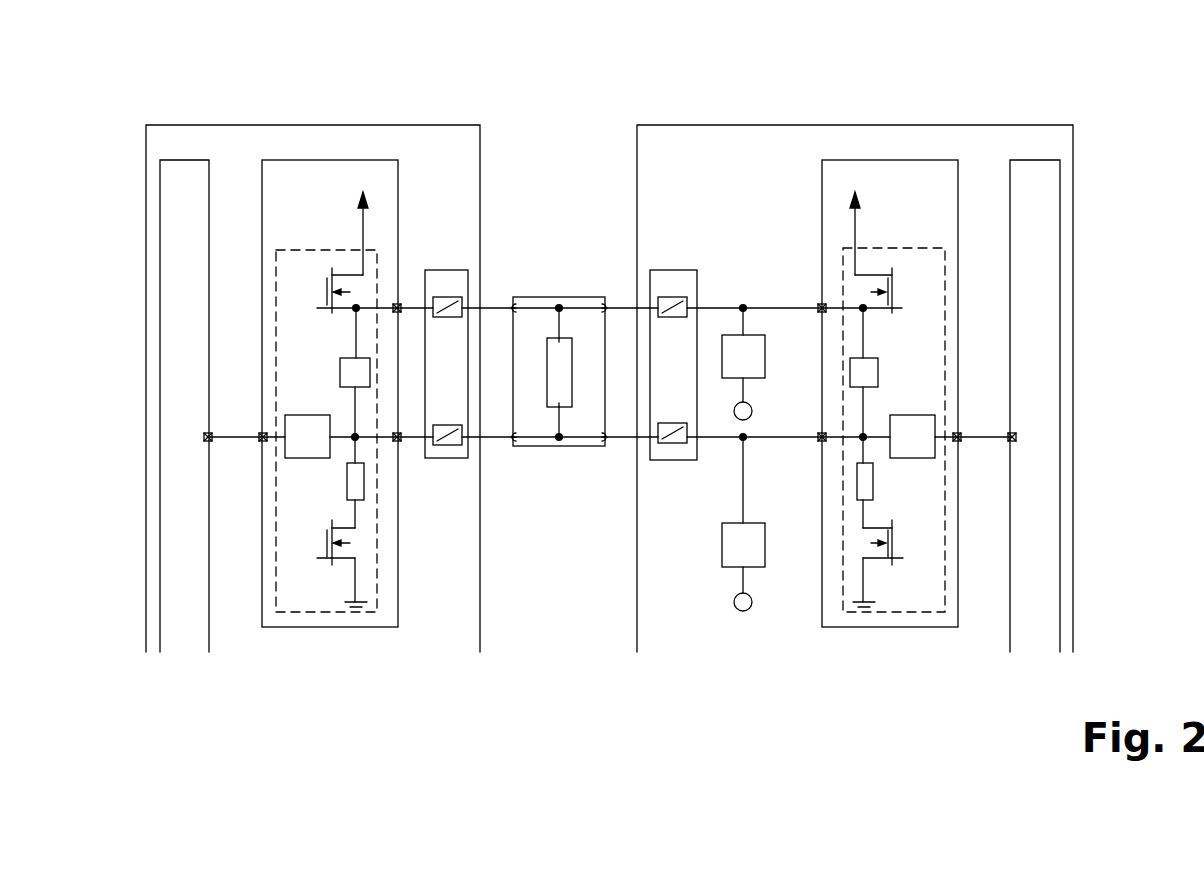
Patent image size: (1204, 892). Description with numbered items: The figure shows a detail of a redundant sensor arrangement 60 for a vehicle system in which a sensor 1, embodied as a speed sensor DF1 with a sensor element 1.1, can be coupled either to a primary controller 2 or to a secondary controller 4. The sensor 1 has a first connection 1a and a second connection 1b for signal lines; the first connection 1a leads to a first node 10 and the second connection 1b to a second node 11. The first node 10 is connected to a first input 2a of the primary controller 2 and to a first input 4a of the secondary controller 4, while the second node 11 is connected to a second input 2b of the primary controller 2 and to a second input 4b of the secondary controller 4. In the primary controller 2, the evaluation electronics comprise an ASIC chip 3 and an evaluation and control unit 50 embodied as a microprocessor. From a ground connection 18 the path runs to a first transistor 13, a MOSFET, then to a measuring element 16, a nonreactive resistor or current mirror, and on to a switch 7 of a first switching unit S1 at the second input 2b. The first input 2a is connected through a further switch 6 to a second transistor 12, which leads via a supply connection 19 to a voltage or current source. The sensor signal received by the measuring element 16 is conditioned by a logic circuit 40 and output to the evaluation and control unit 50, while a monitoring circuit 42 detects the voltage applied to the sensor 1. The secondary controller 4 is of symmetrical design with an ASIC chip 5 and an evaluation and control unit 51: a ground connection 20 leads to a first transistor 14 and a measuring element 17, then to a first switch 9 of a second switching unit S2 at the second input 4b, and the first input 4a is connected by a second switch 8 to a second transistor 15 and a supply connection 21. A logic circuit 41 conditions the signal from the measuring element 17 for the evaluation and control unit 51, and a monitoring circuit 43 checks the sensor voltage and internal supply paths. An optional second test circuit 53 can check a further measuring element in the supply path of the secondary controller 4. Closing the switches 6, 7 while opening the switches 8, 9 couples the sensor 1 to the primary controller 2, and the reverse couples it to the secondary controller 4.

The redundant sensor arrangement 60 is at (838, 78).
The primary controller 2 is at (333, 125).
The ASIC chip 3 is at (398, 160).
The evaluation and control unit 50 is at (185, 160).
The secondary controller 4 is at (888, 125).
The ASIC chip 5 is at (822, 160).
The evaluation and control unit 51 is at (1037, 160).
The sensor 1 is at (537, 297).
The speed sensor DF1 is at (559, 372).
The first connection 1a is at (565, 338).
The second connection 1b is at (557, 410).
The sensor element 1.1 is at (573, 372).
The first input 2a is at (513, 300).
The second input 2b is at (513, 443).
The first input 4a is at (598, 300).
The second input 4b is at (598, 443).
The first node 10 is at (558, 300).
The second node 11 is at (559, 443).
The first switching unit S1 is at (462, 270).
The switch 6 is at (445, 297).
The switch 7 is at (465, 458).
The second switching unit S2 is at (661, 270).
The second switch 8 is at (680, 297).
The first switch 9 is at (664, 460).
The second transistor 12 is at (325, 292).
The first transistor 13 is at (325, 545).
The first transistor 14 is at (893, 543).
The second transistor 15 is at (893, 292).
The measuring element 16 is at (364, 480).
The measuring element 17 is at (857, 480).
The ground connection 18 is at (355, 582).
The supply connection 19 is at (363, 222).
The ground connection 20 is at (863, 585).
The supply connection 21 is at (857, 222).
The logic circuit 40 is at (285, 425).
The logic circuit 41 is at (935, 420).
The monitoring circuit 42 is at (340, 372).
The monitoring circuit 43 is at (878, 372).
The second test circuit 53 is at (765, 355).